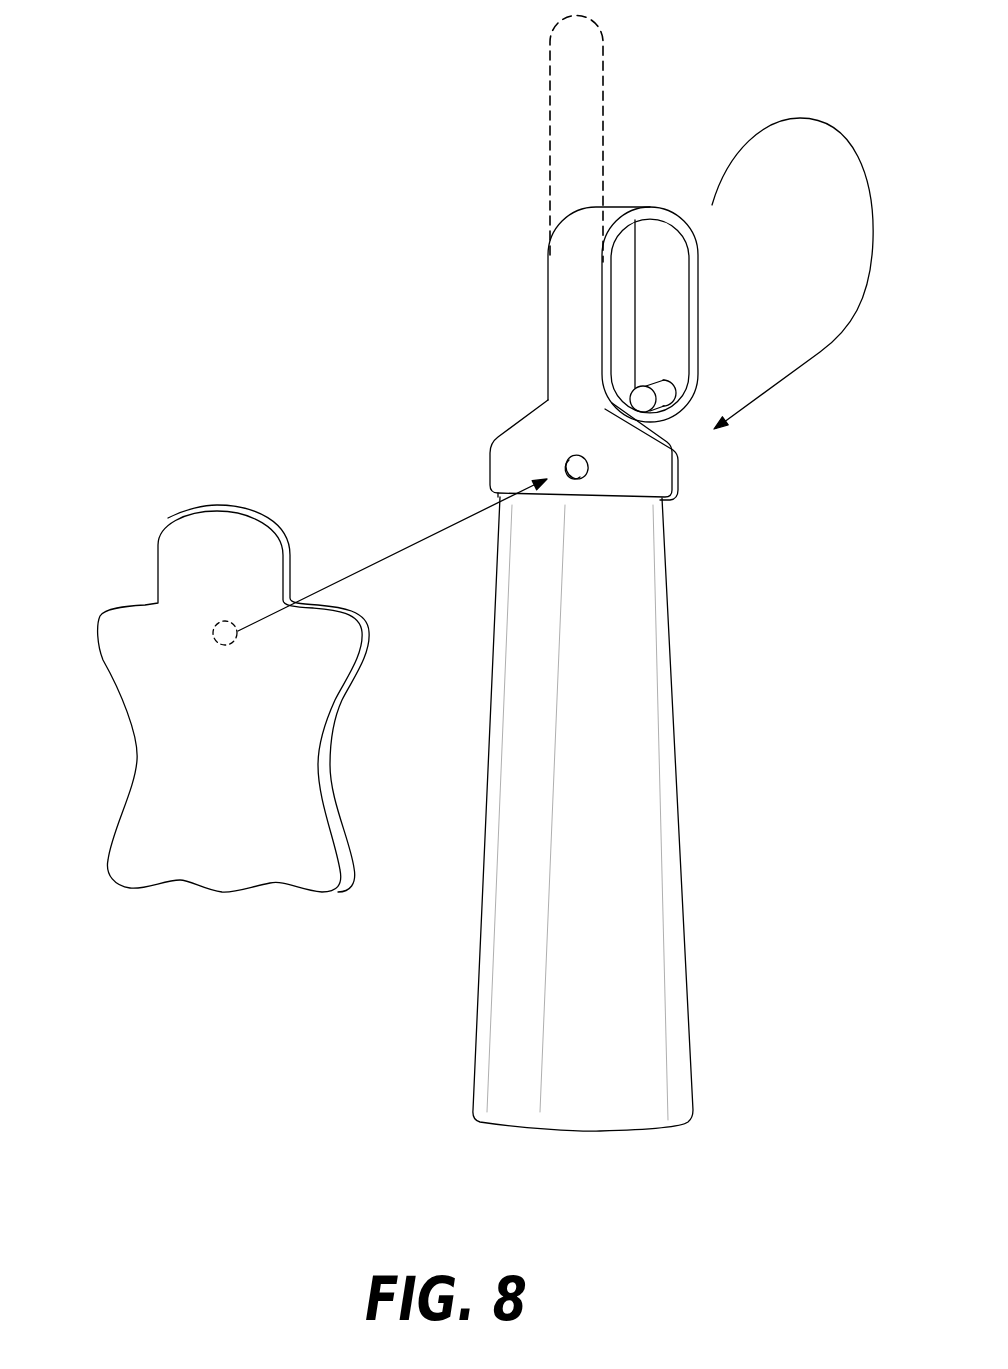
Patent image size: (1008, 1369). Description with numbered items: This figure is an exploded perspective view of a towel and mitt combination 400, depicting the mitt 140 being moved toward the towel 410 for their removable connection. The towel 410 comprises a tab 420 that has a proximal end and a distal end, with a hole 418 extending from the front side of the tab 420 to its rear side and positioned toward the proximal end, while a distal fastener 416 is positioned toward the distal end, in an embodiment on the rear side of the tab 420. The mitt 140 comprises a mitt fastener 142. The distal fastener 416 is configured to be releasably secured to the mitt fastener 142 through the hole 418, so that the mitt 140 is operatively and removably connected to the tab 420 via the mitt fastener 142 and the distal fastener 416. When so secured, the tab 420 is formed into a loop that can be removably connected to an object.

The towel and mitt combination 400 is at (445, 226).
The towel 410 is at (680, 567).
The distal fastener 416 is at (647, 388).
The hole 418 is at (568, 458).
The tab 420 is at (528, 420).
The mitt 140 is at (115, 596).
The mitt fastener 142 is at (216, 645).